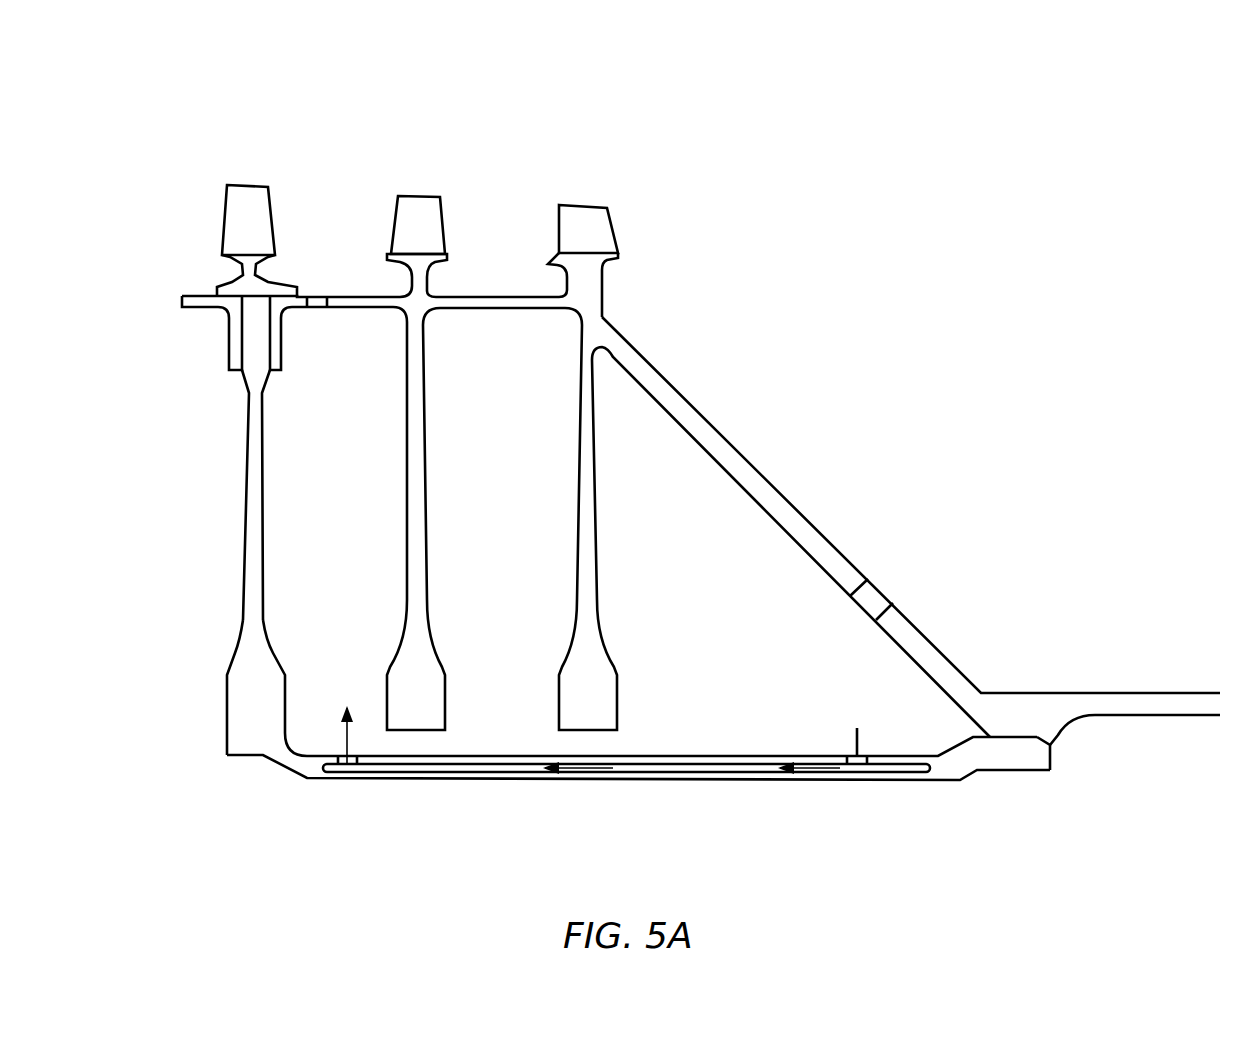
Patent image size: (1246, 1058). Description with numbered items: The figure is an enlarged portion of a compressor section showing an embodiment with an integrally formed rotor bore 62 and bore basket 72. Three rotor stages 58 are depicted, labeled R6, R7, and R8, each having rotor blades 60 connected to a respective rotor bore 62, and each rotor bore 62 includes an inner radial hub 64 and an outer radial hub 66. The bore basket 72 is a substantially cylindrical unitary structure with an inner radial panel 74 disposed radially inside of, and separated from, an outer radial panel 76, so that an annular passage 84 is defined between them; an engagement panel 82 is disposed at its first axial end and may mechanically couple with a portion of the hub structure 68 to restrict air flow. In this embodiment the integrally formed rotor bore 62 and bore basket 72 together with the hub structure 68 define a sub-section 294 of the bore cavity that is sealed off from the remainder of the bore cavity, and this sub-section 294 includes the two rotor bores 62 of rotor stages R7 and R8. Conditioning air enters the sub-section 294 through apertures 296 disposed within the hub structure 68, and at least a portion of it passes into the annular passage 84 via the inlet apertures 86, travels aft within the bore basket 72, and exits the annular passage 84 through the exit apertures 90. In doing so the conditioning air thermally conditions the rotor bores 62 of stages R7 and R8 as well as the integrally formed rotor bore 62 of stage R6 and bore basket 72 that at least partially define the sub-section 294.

The rotor stage 58 is at (394, 531).
The rotor blade 60 is at (238, 213).
The rotor bore 62 is at (250, 450).
The inner radial hub 64 is at (270, 723).
The outer radial hub 66 is at (567, 278).
The hub structure 68 is at (357, 272).
The bore basket 72 is at (536, 806).
The inner radial panel 74 is at (398, 781).
The outer radial panel 76 is at (697, 756).
The engagement panel 82 is at (1010, 771).
The annular passage 84 is at (648, 771).
The inlet aperture 86 is at (858, 763).
The exit aperture 90 is at (340, 760).
The sub-section 294 is at (720, 603).
The aperture 296 is at (836, 634).
The rotor stage R6 is at (238, 155).
The rotor stage R7 is at (422, 163).
The rotor stage R8 is at (586, 165).